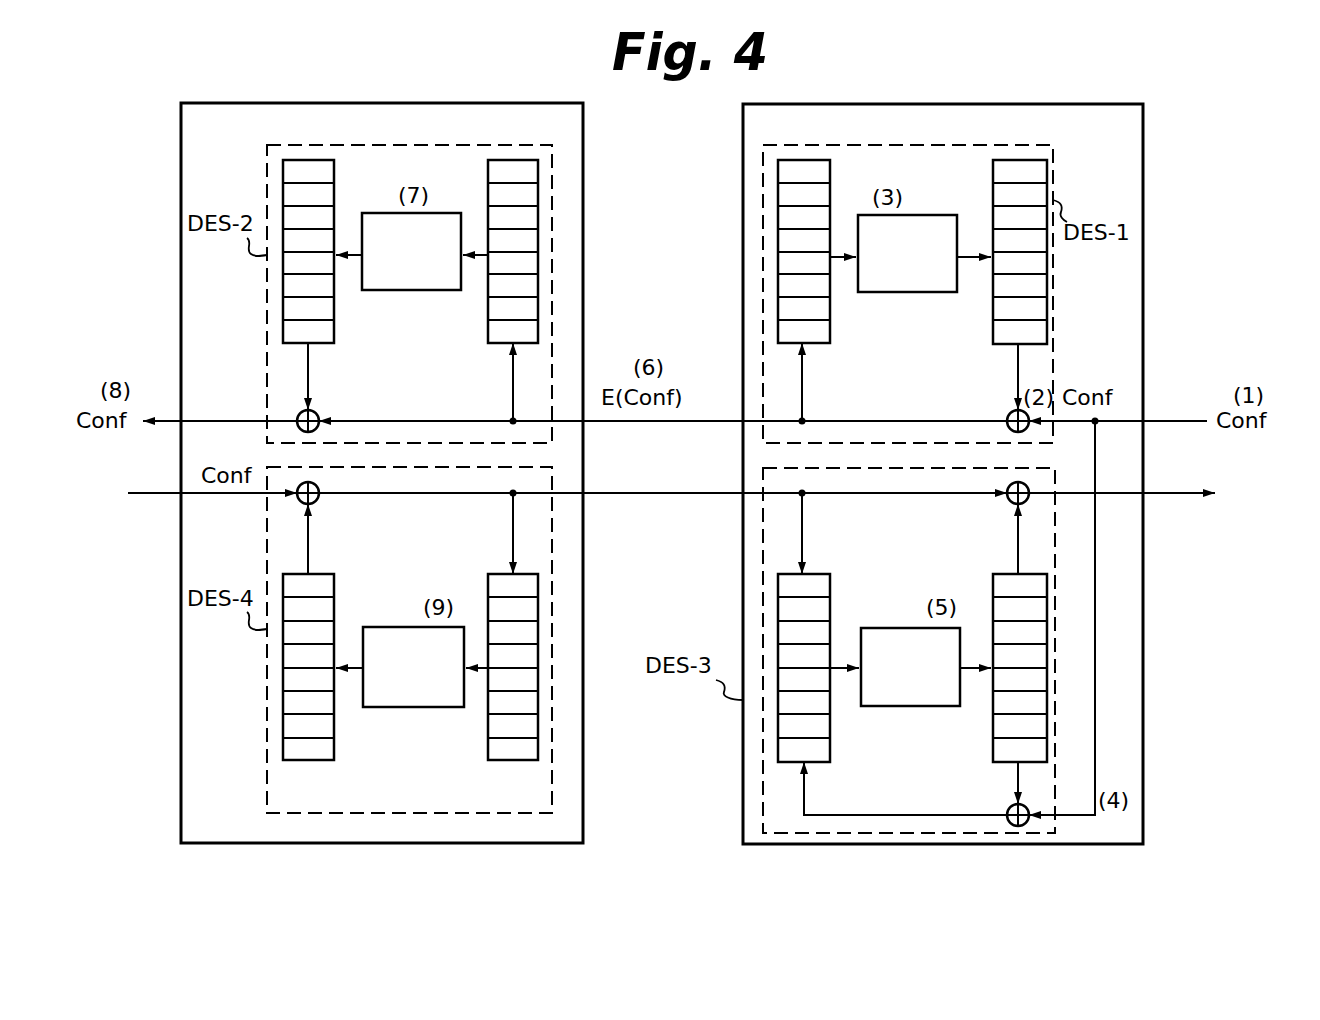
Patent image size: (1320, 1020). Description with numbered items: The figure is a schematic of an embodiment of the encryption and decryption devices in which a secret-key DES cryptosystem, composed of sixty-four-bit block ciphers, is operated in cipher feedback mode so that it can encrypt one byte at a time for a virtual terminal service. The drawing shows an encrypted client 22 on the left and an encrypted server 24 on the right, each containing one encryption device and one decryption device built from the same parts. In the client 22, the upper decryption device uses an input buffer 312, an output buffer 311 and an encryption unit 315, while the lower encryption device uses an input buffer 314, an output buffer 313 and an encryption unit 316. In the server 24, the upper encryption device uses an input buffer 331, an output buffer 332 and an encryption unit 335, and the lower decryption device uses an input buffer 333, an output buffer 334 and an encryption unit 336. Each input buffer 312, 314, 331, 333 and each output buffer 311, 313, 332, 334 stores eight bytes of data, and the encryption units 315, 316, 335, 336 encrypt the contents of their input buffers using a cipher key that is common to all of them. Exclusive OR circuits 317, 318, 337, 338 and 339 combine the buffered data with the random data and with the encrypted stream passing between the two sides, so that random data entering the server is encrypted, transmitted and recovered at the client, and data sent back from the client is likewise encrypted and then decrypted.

The encrypted client 22 is at (179, 258).
The encrypted server 24 is at (743, 206).
The output buffer 311 is at (334, 178).
The input buffer 312 is at (488, 335).
The output buffer 313 is at (334, 730).
The input buffer 314 is at (488, 756).
The encryption unit 315 is at (411, 290).
The encryption unit 316 is at (380, 627).
The exclusive OR circuit 317 is at (317, 415).
The exclusive OR circuit 318 is at (317, 500).
The input buffer 331 is at (830, 330).
The output buffer 332 is at (993, 185).
The input buffer 333 is at (815, 574).
The output buffer 334 is at (993, 740).
The encryption unit 335 is at (875, 292).
The encryption unit 336 is at (878, 628).
The exclusive OR circuit 337 is at (1010, 412).
The exclusive OR circuit 338 is at (1010, 502).
The exclusive OR circuit 339 is at (1008, 806).